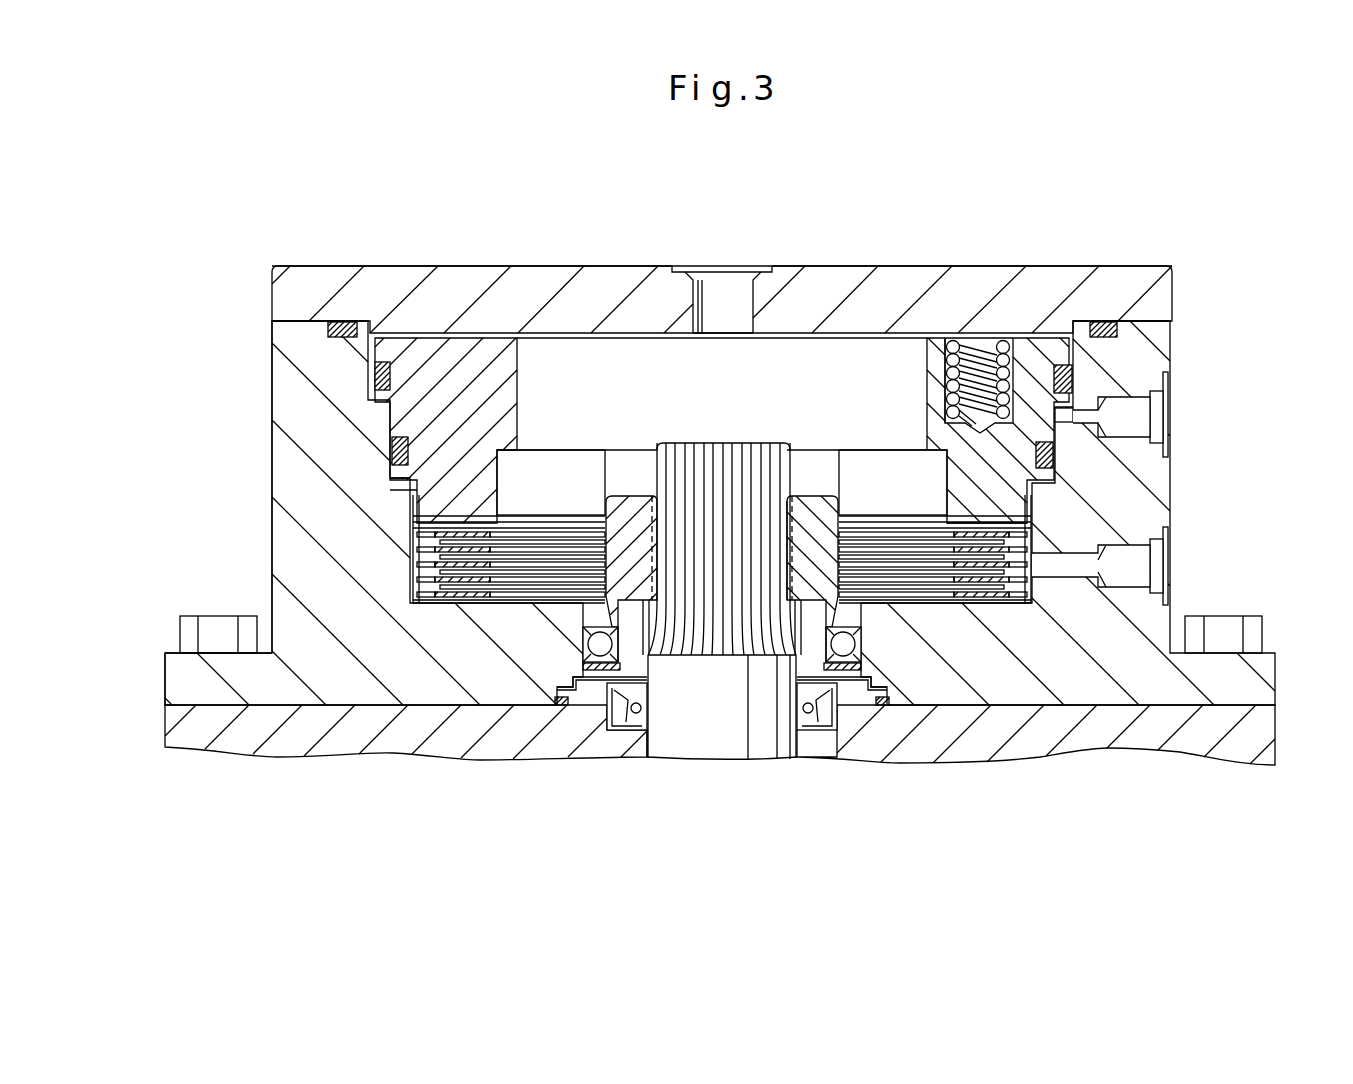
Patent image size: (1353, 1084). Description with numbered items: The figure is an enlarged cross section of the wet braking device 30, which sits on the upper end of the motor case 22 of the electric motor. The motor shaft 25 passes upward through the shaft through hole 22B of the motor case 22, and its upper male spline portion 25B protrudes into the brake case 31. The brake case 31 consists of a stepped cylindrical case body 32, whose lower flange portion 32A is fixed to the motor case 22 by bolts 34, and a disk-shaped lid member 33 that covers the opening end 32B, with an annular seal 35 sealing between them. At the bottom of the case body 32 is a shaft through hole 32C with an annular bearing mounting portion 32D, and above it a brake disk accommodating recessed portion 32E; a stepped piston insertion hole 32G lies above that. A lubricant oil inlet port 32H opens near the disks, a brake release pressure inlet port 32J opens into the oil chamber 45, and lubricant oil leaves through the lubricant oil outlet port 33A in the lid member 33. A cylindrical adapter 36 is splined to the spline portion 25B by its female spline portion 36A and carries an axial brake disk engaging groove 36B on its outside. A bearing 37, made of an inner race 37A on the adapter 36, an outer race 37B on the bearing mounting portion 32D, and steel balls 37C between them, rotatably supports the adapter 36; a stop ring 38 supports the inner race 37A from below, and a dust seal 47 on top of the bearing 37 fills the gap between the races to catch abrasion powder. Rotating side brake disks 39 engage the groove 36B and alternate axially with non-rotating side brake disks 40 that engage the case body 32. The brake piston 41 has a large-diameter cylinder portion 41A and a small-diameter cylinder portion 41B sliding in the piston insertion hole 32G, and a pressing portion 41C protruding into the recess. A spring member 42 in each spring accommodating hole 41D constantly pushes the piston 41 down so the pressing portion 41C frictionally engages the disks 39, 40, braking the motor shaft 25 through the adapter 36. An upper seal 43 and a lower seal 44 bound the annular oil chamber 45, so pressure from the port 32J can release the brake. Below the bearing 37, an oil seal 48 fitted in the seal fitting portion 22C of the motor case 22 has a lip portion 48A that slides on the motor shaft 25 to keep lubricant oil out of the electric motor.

The motor case 22 is at (1168, 745).
The shaft through hole 22B is at (646, 722).
The seal fitting portion 22C is at (800, 722).
The motor shaft 25 is at (727, 725).
The upper male spline portion 25B is at (748, 480).
The wet braking device 30 is at (876, 232).
The brake case 31 is at (270, 334).
The case body 32 is at (330, 578).
The lower flange portion 32A is at (232, 685).
The opening end 32B is at (1066, 333).
The shaft through hole 32C is at (592, 555).
The bearing mounting portion 32D is at (883, 708).
The brake disk accommodating recessed portion 32E is at (420, 507).
The piston insertion hole 32G is at (358, 330).
The lubricant oil inlet port 32H is at (1130, 567).
The brake release pressure inlet port 32J is at (1130, 408).
The lid member 33 is at (597, 300).
The lubricant oil outlet port 33A is at (735, 300).
The bolt 34 is at (218, 637).
The annular seal 35 is at (1106, 330).
The adapter 36 is at (632, 525).
The female spline portion 36A is at (676, 530).
The brake disk engaging groove 36B is at (838, 535).
The bearing 37 is at (858, 660).
The inner race 37A is at (598, 668).
The outer race 37B is at (578, 688).
The steel balls 37C is at (598, 648).
The stop ring 38 is at (852, 690).
The rotating side brake disks 39 is at (522, 545).
The non-rotating side brake disks 40 is at (958, 604).
The brake piston 41 is at (483, 398).
The large-diameter cylinder portion 41A is at (378, 393).
The small-diameter cylinder portion 41B is at (404, 428).
The pressing portion 41C is at (1002, 507).
The spring accommodating holes 41D is at (967, 345).
The spring member 42 is at (1000, 350).
The upper seal 43 is at (1073, 378).
The lower seal 44 is at (1054, 462).
The oil chamber 45 is at (1060, 416).
The dust seal 47 is at (842, 600).
The oil seal 48 is at (614, 708).
The lip portion 48A is at (805, 710).